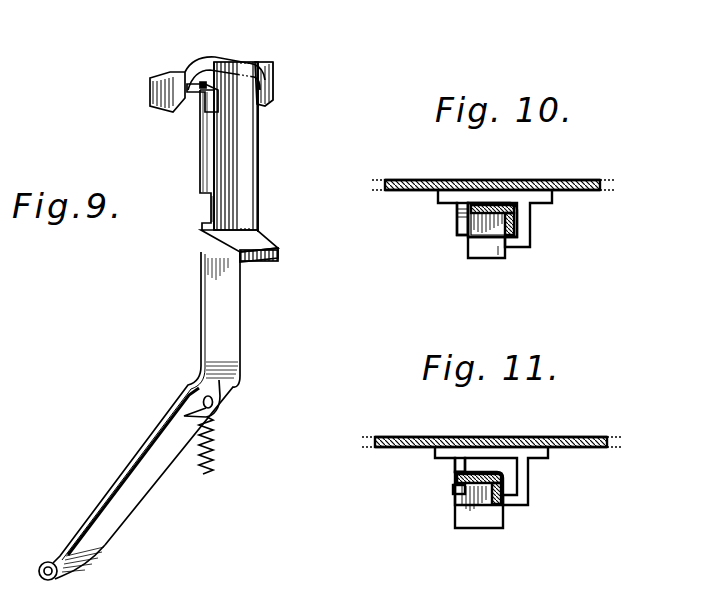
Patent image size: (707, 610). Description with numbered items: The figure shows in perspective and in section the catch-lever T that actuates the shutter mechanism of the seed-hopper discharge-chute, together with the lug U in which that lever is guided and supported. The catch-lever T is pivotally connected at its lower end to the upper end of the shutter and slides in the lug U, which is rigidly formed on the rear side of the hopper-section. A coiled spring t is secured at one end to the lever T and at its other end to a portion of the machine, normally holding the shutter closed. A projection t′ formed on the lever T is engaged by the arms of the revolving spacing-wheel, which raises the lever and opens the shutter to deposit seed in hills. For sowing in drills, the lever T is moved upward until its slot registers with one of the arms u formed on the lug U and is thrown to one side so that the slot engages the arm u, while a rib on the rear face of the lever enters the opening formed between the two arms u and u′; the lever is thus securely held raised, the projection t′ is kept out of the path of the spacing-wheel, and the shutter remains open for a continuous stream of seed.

In FIG. 9, the catch-lever T is at (196, 292).
In FIG. 10, the catch-lever T is at (480, 203).
In FIG. 11, the catch-lever T is at (478, 470).
In FIG. 9, the coiled spring t is at (215, 450).
In FIG. 9, the projection t′ is at (272, 259).
In FIG. 10, the projection t′ is at (506, 256).
In FIG. 11, the projection t′ is at (492, 518).
In FIG. 9, the lug U is at (167, 77).
In FIG. 10, the lug U is at (520, 195).
In FIG. 11, the lug U is at (501, 453).
In FIG. 9, the arm u is at (198, 103).
In FIG. 10, the arm u is at (456, 229).
In FIG. 11, the arm u is at (455, 472).
In FIG. 9, the arm u′ is at (278, 91).
In FIG. 10, the arm u′ is at (505, 218).
In FIG. 11, the arm u′ is at (530, 488).